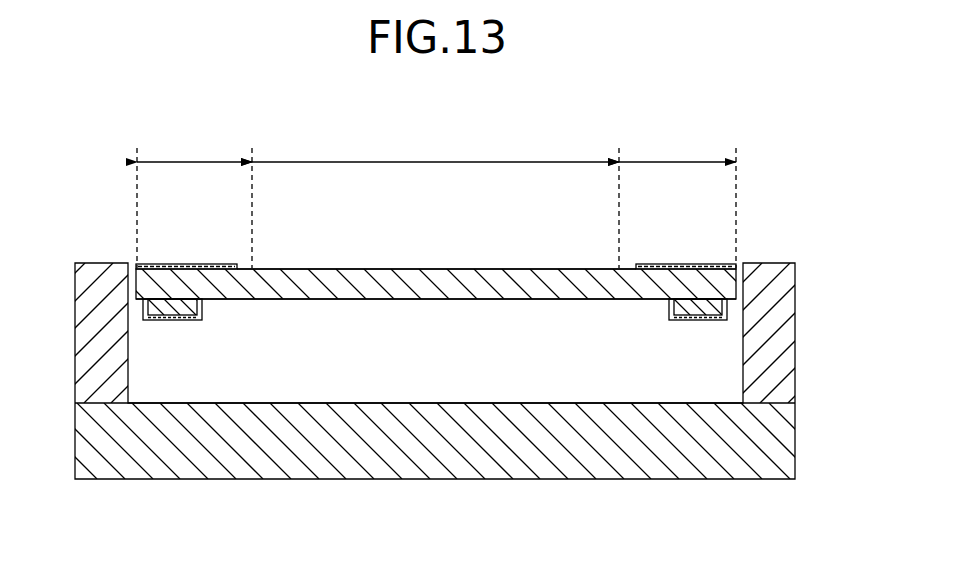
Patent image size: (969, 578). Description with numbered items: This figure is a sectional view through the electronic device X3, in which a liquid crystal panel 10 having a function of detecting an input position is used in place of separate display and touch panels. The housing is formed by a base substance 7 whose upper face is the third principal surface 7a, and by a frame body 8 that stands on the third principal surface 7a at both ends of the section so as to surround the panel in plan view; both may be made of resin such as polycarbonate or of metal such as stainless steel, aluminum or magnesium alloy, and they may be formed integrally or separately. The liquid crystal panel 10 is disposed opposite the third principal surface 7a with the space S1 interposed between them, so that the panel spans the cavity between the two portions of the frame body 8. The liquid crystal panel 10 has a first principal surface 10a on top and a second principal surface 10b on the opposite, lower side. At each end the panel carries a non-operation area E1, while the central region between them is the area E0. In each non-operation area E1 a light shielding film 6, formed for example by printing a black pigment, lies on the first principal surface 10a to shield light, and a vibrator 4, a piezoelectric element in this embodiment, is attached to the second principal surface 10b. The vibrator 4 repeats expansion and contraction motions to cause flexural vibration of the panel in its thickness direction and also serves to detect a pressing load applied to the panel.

The vibrator 4 is at (178, 312).
The light shielding film 6 is at (160, 265).
The base substance 7 is at (428, 467).
The third principal surface 7a is at (195, 399).
The frame body 8 is at (85, 333).
The liquid crystal panel 10 is at (300, 280).
The first principal surface 10a is at (342, 269).
The second principal surface 10b is at (362, 299).
The space S1 is at (528, 330).
The central region width E0 is at (435, 151).
The non-operation area E1 is at (436, 203).
The electronic device X3 is at (769, 156).